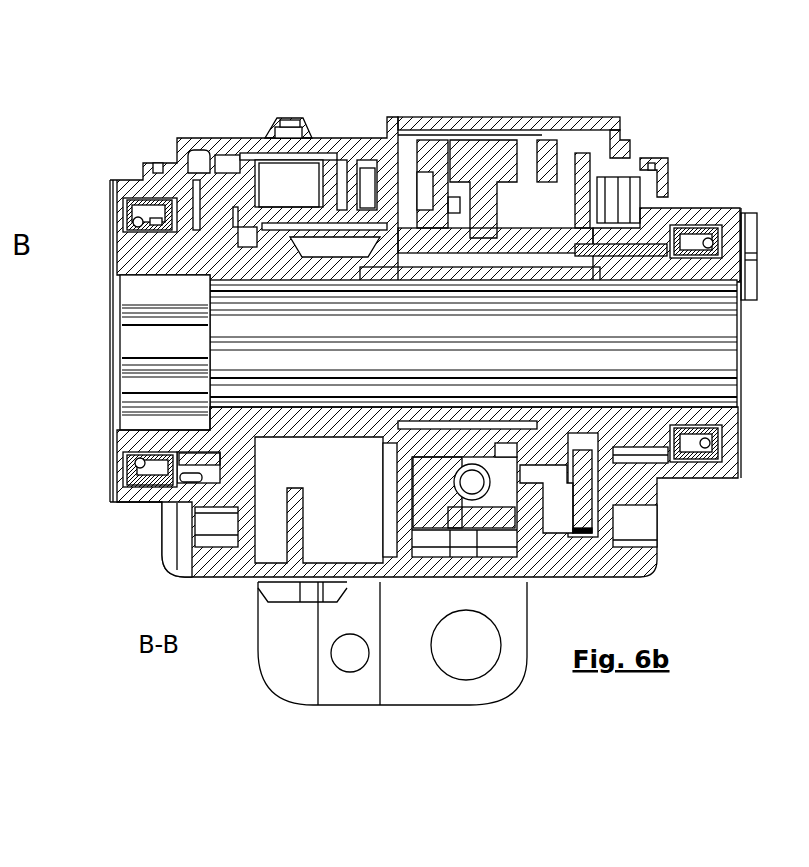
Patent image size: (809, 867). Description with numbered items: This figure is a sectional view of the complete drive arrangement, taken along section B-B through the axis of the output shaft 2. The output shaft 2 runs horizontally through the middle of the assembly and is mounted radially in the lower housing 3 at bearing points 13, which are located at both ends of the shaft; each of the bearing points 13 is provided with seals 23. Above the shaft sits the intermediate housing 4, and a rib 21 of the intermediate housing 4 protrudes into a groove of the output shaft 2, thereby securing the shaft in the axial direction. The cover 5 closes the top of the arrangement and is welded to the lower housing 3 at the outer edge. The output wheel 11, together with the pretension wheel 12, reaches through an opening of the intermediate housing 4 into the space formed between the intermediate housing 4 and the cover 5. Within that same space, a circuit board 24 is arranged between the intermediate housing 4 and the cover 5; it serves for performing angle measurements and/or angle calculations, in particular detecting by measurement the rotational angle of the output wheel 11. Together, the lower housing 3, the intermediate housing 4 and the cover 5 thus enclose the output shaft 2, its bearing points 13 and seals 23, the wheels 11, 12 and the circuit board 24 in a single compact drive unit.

The output shaft 2 is at (222, 435).
The lower housing 3 is at (633, 577).
The intermediate housing 4 is at (293, 207).
The cover 5 is at (222, 135).
The output wheel 11 is at (485, 153).
The pretension wheel 12 is at (432, 150).
The bearing points 13 is at (138, 190).
The rib 21 is at (241, 245).
The seals 23 is at (125, 477).
The circuit board 24 is at (583, 478).